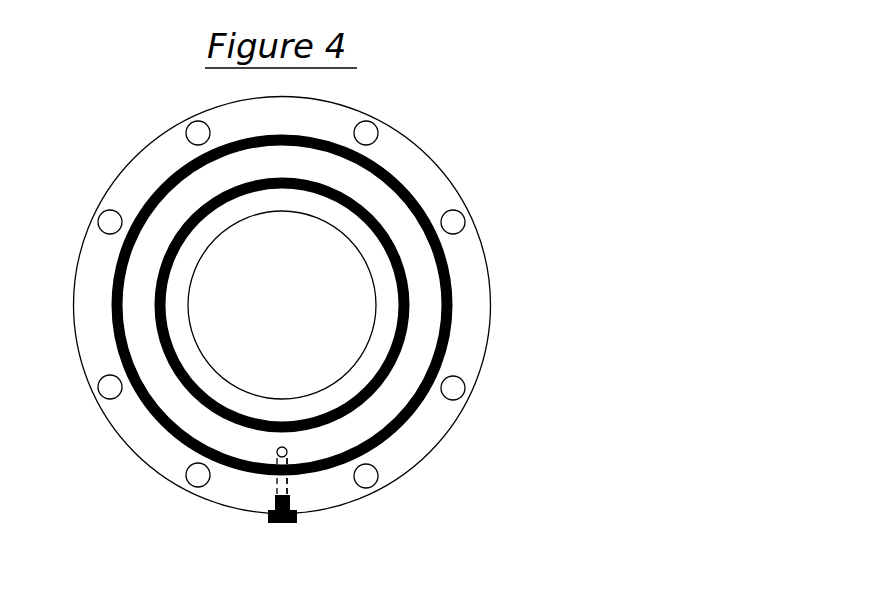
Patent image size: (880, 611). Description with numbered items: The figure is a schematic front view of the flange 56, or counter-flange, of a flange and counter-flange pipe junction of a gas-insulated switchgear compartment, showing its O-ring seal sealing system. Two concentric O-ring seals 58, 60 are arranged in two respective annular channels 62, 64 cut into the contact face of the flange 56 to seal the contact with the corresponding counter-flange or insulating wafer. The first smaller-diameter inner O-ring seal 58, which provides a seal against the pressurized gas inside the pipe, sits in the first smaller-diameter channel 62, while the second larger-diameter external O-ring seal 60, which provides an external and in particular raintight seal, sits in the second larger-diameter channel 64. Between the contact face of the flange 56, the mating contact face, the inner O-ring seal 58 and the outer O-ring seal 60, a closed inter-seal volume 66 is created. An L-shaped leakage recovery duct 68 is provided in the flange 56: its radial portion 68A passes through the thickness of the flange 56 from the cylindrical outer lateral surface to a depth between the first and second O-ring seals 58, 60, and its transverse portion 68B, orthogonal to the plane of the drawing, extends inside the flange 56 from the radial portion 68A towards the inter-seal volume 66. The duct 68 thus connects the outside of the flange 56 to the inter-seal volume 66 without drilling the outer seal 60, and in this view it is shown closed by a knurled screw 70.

The flange 56 is at (114, 135).
The first inner O-ring seal 58 is at (391, 250).
The second external O-ring seal 60 is at (398, 180).
The first channel 62 is at (288, 196).
The second channel 64 is at (287, 128).
The inter-seal volume 66 is at (425, 298).
The L-shaped leakage recovery duct 68 is at (256, 489).
The radial portion 68A is at (290, 479).
The transverse portion 68B is at (277, 453).
The knurled screw 70 is at (282, 523).